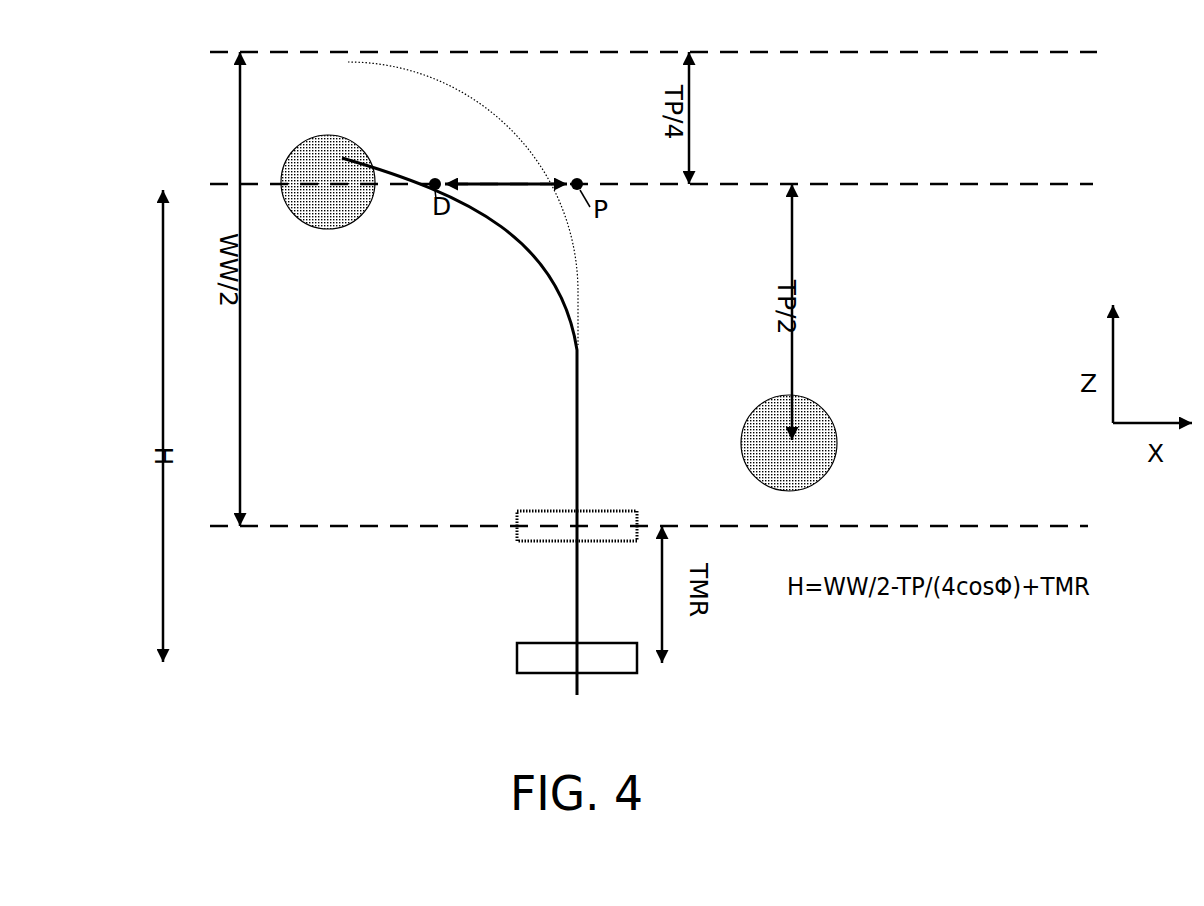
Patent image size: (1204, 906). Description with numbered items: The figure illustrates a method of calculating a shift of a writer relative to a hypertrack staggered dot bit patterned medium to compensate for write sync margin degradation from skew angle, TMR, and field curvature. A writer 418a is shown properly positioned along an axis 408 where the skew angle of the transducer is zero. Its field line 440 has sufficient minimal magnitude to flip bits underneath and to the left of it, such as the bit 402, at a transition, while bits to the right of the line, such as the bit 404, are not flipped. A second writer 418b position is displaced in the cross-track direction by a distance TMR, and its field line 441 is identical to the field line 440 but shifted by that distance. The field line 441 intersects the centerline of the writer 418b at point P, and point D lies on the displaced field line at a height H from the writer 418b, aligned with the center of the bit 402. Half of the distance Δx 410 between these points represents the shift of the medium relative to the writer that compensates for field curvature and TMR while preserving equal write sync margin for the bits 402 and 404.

The bit 402 is at (327, 136).
The bit 404 is at (757, 408).
The axis 408 is at (408, 526).
The distance Δx 410 is at (489, 176).
The writer 418a is at (538, 541).
The writer 418b is at (558, 673).
The field line 440 is at (483, 108).
The field line 441 is at (505, 229).